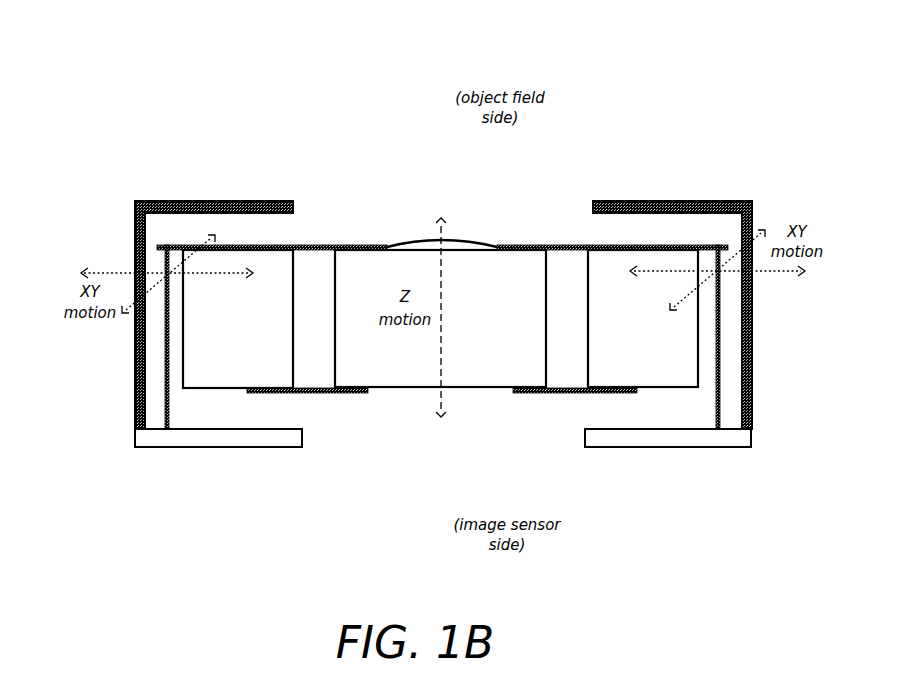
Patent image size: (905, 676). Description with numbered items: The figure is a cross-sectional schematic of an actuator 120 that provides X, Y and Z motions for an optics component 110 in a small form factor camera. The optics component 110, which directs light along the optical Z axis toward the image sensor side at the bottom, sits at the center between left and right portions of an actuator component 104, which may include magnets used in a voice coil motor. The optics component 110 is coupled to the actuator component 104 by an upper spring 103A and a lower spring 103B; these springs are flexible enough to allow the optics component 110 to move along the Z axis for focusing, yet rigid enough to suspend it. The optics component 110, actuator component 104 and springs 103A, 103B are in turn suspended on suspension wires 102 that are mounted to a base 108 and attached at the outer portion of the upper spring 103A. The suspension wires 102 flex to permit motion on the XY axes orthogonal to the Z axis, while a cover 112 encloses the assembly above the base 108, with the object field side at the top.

The actuator 120 is at (70, 107).
The cover 112 is at (223, 197).
The base 108 is at (222, 452).
The suspension wire 102 is at (161, 364).
The upper spring 103A is at (313, 241).
The lower spring 103B is at (308, 397).
The actuator component 104 is at (440, 319).
The optics component 110 is at (440, 313).